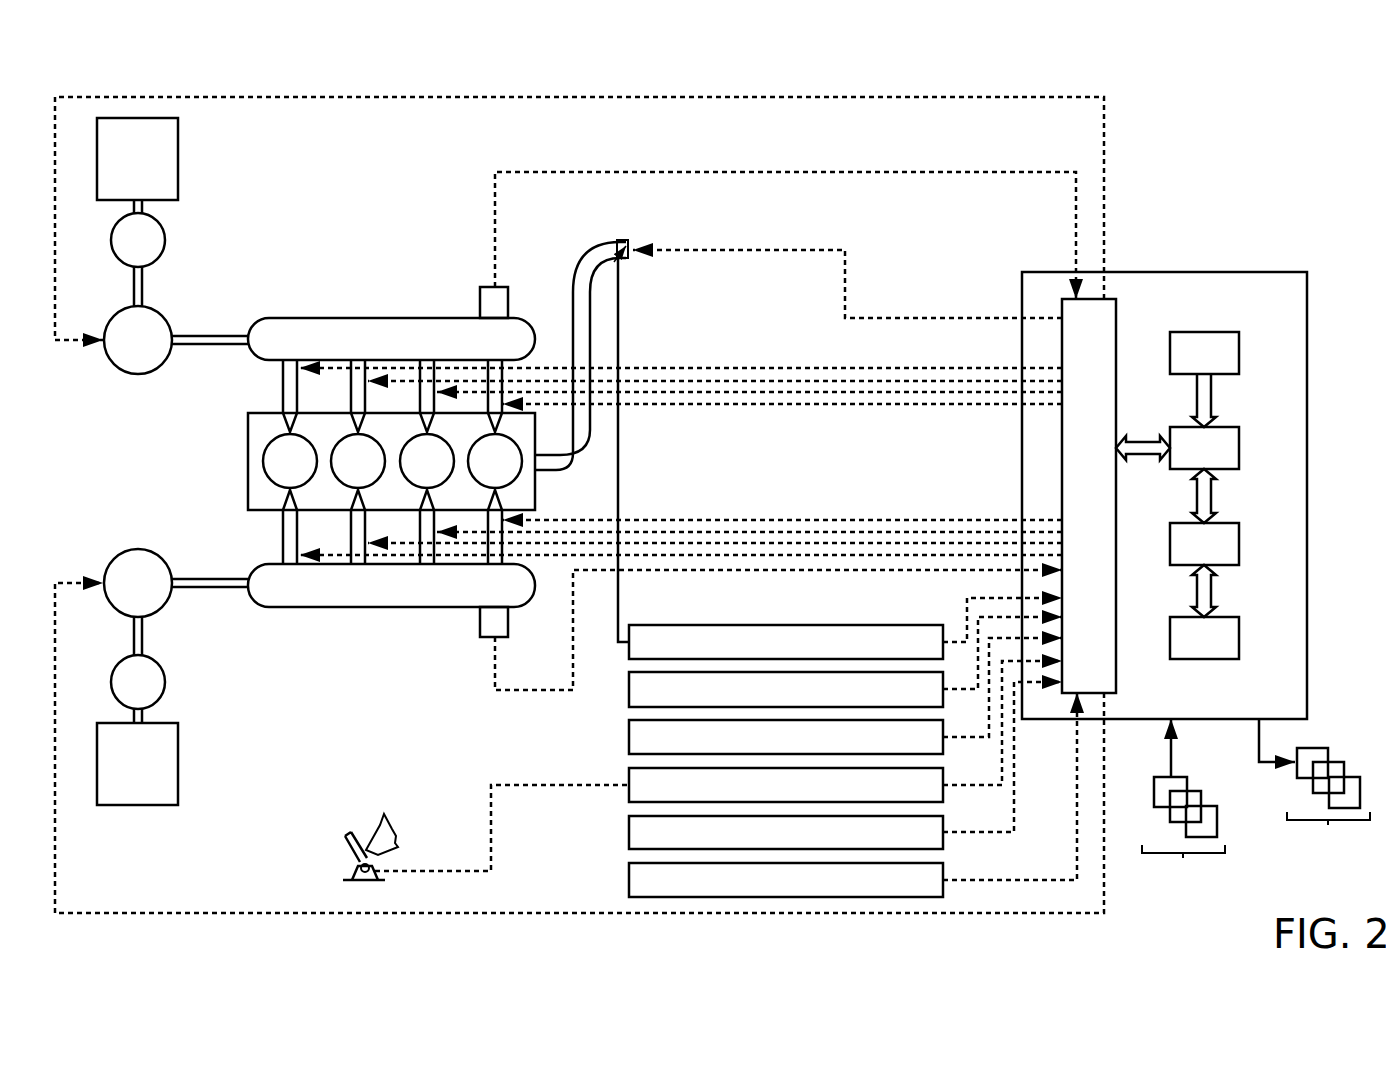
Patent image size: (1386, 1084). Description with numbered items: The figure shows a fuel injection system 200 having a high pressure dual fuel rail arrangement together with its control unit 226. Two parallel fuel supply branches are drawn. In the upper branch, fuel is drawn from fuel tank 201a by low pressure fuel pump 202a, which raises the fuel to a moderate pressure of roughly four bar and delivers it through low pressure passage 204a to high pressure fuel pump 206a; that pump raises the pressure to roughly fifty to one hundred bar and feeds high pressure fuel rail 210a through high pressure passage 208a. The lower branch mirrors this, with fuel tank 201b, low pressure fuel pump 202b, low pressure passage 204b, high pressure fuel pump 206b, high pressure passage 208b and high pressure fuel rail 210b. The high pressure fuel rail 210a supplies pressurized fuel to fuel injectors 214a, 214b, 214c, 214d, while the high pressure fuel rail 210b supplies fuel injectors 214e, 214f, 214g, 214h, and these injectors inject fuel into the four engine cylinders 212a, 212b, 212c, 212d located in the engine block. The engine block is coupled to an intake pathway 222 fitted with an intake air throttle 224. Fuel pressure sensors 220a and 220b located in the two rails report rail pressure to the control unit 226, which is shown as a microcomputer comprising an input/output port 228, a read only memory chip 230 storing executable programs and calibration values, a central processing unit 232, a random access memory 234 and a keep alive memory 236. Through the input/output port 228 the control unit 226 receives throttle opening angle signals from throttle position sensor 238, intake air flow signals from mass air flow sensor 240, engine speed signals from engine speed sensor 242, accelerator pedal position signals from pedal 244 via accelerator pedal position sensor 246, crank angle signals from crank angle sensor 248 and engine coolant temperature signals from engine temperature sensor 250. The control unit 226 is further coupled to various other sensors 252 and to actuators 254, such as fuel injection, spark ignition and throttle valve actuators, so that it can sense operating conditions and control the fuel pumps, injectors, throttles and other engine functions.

The fuel injection system 200 is at (1200, 145).
The fuel tank 201a is at (118, 170).
The fuel tank 201b is at (118, 775).
The low pressure fuel pump 202a is at (118, 252).
The low pressure fuel pump 202b is at (118, 694).
The low pressure passage 204a is at (143, 292).
The low pressure passage 204b is at (143, 632).
The high pressure fuel pump 206a is at (116, 352).
The high pressure fuel pump 206b is at (116, 595).
The high pressure passage 208a is at (203, 335).
The high pressure passage 208b is at (203, 590).
The high pressure fuel rail 210a is at (391, 339).
The high pressure fuel rail 210b is at (391, 585).
The engine cylinder 212a is at (269, 473).
The engine cylinder 212b is at (337, 473).
The engine cylinder 212c is at (406, 473).
The engine cylinder 212d is at (474, 473).
The fuel injector 214a is at (283, 372).
The fuel injector 214b is at (352, 360).
The fuel injector 214c is at (421, 360).
The fuel injector 214d is at (502, 360).
The fuel injector 214e is at (283, 553).
The fuel injector 214f is at (352, 564).
The fuel injector 214g is at (421, 564).
The fuel injector 214h is at (502, 564).
The fuel pressure sensor 220a is at (481, 298).
The fuel pressure sensor 220b is at (481, 630).
The intake pathway 222 is at (577, 272).
The intake air throttle 224 is at (690, 250).
The control unit 226 is at (1307, 497).
The input/output port 228 is at (1117, 345).
The read only memory chip 230 is at (1239, 352).
The central processing unit 232 is at (1239, 447).
The random access memory 234 is at (1239, 543).
The keep alive memory 236 is at (1239, 638).
The throttle position sensor 238 is at (788, 625).
The mass air flow sensor 240 is at (629, 689).
The engine speed sensor 242 is at (629, 737).
The pedal 244 is at (345, 850).
The accelerator pedal position sensor 246 is at (629, 785).
The crank angle sensor 248 is at (629, 832).
The engine temperature sensor 250 is at (629, 880).
The sensors 252 is at (1182, 812).
The actuators 254 is at (1322, 796).